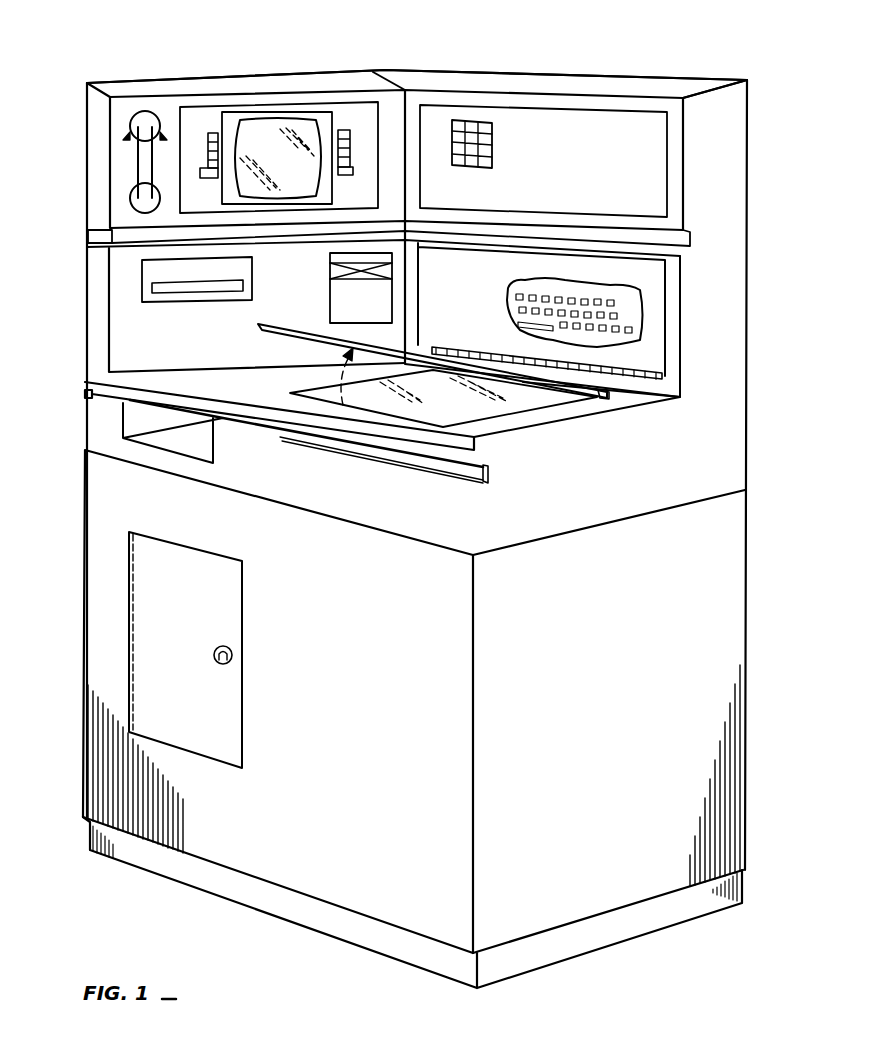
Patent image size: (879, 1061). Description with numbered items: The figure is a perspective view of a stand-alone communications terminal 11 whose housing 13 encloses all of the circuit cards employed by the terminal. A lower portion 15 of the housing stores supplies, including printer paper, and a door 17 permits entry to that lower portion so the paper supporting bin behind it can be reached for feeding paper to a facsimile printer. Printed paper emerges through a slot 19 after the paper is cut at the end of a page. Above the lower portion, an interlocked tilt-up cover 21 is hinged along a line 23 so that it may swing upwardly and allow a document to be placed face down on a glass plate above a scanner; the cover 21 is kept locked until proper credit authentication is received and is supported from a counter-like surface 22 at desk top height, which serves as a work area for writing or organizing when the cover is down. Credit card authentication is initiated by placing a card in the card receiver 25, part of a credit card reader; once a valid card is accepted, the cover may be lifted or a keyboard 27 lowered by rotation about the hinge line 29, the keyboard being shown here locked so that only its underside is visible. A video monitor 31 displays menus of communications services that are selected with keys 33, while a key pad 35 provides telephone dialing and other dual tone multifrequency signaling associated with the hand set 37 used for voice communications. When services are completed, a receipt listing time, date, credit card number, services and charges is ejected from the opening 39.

The communications terminal 11 is at (704, 50).
The housing 13 is at (730, 142).
The lower portion 15 is at (115, 790).
The door 17 is at (223, 708).
The slot 19 is at (133, 413).
The tilt-up cover 21 is at (307, 342).
The counter-like surface 22 is at (273, 390).
The hinge line 23 is at (600, 397).
The card receiver 25 is at (348, 270).
The keyboard 27 is at (632, 300).
The hinge line 29 is at (637, 365).
The video monitor 31 is at (260, 130).
The keys 33 is at (213, 133).
The key pad 35 is at (472, 120).
The hand set 37 is at (138, 170).
The opening 39 is at (202, 297).